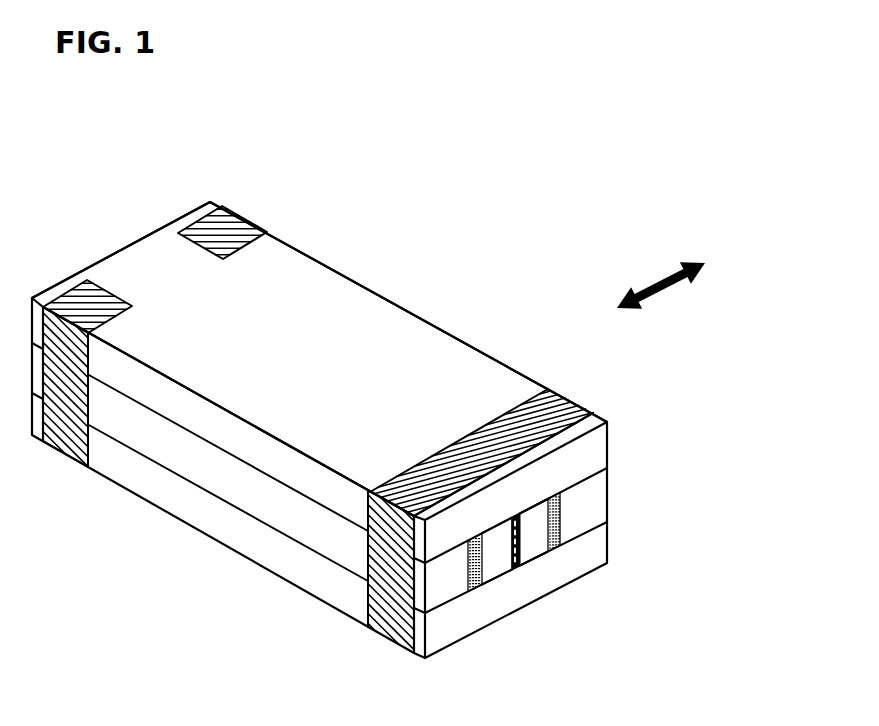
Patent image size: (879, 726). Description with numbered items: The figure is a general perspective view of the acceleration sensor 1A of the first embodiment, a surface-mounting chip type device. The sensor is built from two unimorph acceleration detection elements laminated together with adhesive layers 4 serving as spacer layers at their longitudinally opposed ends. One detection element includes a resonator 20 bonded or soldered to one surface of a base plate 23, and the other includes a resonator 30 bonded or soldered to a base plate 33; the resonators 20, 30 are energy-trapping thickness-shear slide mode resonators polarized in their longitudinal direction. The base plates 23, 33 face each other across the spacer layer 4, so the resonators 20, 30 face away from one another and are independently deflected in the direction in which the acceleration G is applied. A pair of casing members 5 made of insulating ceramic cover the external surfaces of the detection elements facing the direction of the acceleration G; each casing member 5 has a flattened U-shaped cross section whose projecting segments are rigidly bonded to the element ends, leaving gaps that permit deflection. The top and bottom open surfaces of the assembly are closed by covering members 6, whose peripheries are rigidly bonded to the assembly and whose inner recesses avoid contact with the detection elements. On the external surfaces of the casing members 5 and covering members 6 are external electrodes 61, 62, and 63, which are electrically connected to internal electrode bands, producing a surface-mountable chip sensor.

The acceleration sensor 1A is at (476, 294).
The adhesive layer 4 is at (522, 567).
The casing member 5 is at (593, 500).
The covering member 6 is at (357, 300).
The resonator 20 is at (563, 533).
The base plate 23 is at (535, 548).
The resonator 30 is at (477, 587).
The base plate 33 is at (497, 577).
The external electrode 61 is at (513, 410).
The external electrode 62 is at (233, 228).
The external electrode 63 is at (62, 293).
The acceleration G is at (661, 279).